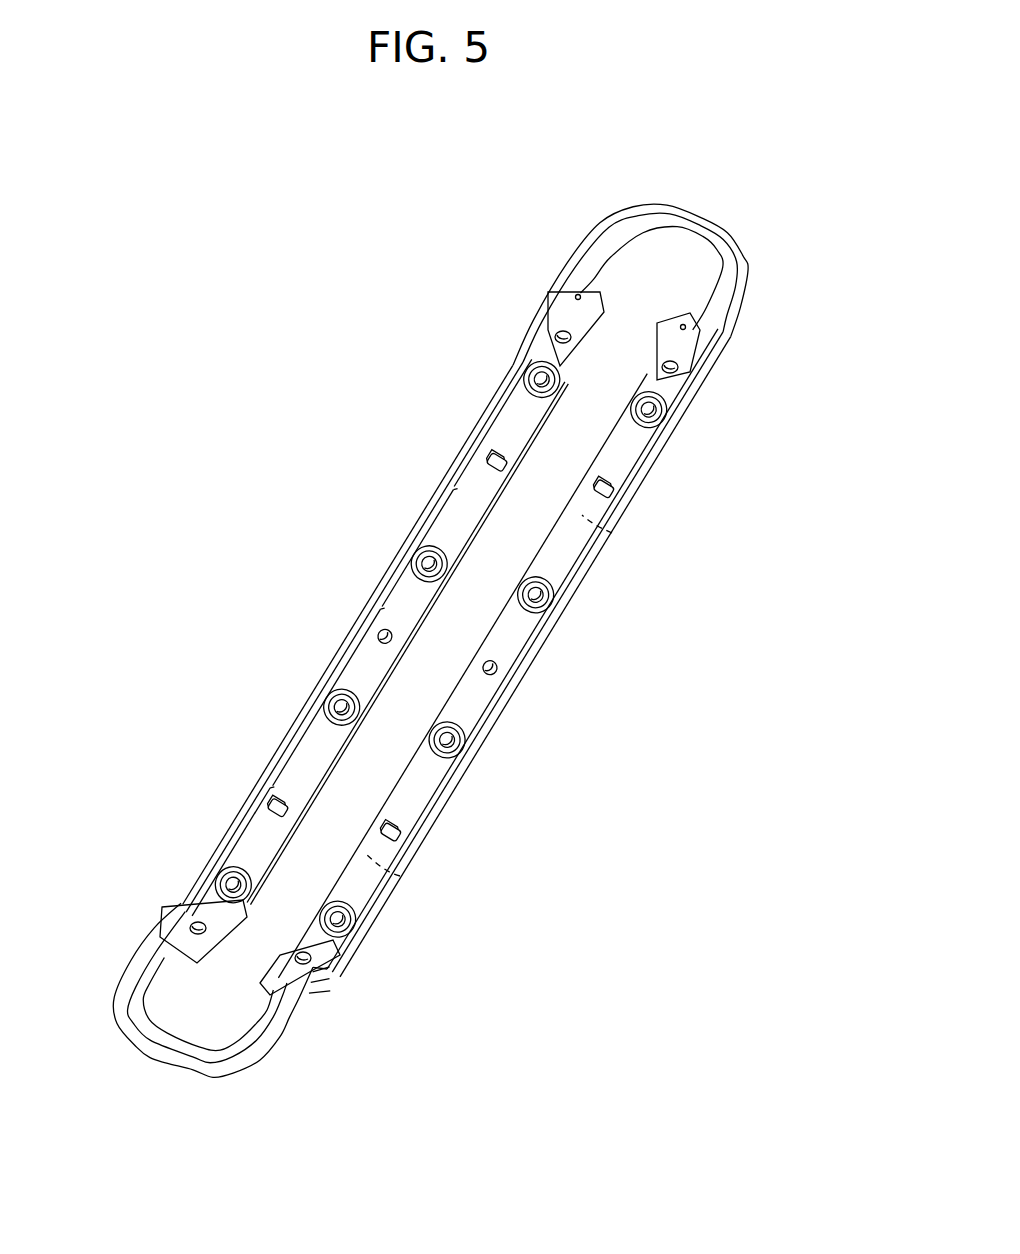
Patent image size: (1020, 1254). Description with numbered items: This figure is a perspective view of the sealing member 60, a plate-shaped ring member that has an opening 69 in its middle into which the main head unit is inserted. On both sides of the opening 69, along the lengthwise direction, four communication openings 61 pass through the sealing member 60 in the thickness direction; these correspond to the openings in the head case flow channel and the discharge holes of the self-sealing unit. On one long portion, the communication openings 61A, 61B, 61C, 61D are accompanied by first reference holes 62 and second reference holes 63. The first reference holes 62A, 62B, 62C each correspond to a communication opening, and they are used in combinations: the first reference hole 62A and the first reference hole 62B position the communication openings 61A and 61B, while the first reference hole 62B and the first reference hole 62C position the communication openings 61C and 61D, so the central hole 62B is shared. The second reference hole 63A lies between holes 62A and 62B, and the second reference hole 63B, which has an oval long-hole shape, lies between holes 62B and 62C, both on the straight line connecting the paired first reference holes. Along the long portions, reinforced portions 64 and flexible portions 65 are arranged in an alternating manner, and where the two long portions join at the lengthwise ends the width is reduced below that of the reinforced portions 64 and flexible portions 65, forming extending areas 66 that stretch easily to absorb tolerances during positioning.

The sealing member 60 is at (414, 445).
The communication openings 61 is at (560, 705).
The communication opening 61A is at (342, 932).
The communication opening 61B is at (460, 742).
The communication opening 61C is at (552, 601).
The communication opening 61D is at (660, 416).
The first reference holes 62 is at (564, 717).
The first reference hole 62A is at (306, 964).
The first reference hole 62B is at (505, 669).
The first reference hole 62C is at (685, 370).
The second reference holes 63 is at (570, 673).
The second reference hole 63A is at (397, 831).
The second reference hole 63B is at (612, 490).
The reinforced portions 64 is at (473, 700).
The flexible portions 65 is at (612, 533).
The extending areas 66 is at (137, 1040).
The opening 69 is at (646, 278).